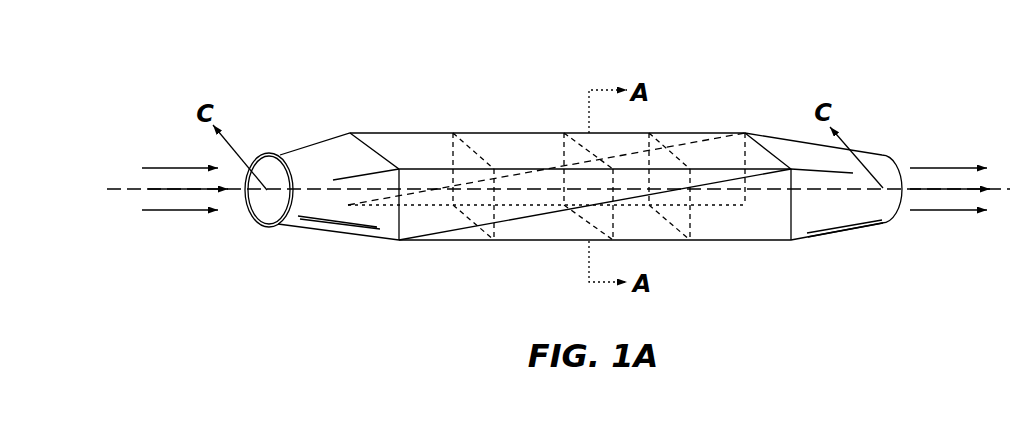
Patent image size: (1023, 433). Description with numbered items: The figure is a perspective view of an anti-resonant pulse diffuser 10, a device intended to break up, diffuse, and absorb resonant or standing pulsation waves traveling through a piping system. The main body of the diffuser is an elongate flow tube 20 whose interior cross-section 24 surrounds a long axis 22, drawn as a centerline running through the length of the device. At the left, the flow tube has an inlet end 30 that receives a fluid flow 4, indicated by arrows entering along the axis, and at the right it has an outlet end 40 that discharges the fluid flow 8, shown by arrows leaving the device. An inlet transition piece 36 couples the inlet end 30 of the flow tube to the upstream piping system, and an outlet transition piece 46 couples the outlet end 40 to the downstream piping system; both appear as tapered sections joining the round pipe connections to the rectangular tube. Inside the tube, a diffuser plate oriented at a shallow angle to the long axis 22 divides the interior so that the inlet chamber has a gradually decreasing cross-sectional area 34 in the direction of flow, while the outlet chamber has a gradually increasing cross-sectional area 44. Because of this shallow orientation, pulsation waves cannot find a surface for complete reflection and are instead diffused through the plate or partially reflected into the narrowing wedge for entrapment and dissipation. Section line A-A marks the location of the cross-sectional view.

The anti-resonant pulse diffuser 10 is at (913, 73).
The elongate flow tube 20 is at (693, 133).
The inlet end 30 is at (383, 153).
The inlet transition piece 36 is at (338, 237).
The gradually decreasing cross-sectional area 34 is at (475, 200).
The interior cross-section 24 is at (564, 158).
The gradually increasing cross-sectional area 44 is at (688, 217).
The outlet end 40 is at (793, 213).
The outlet transition piece 46 is at (865, 152).
The long axis 22 is at (123, 191).
The fluid flow 4 is at (183, 168).
The fluid flow 8 is at (943, 167).